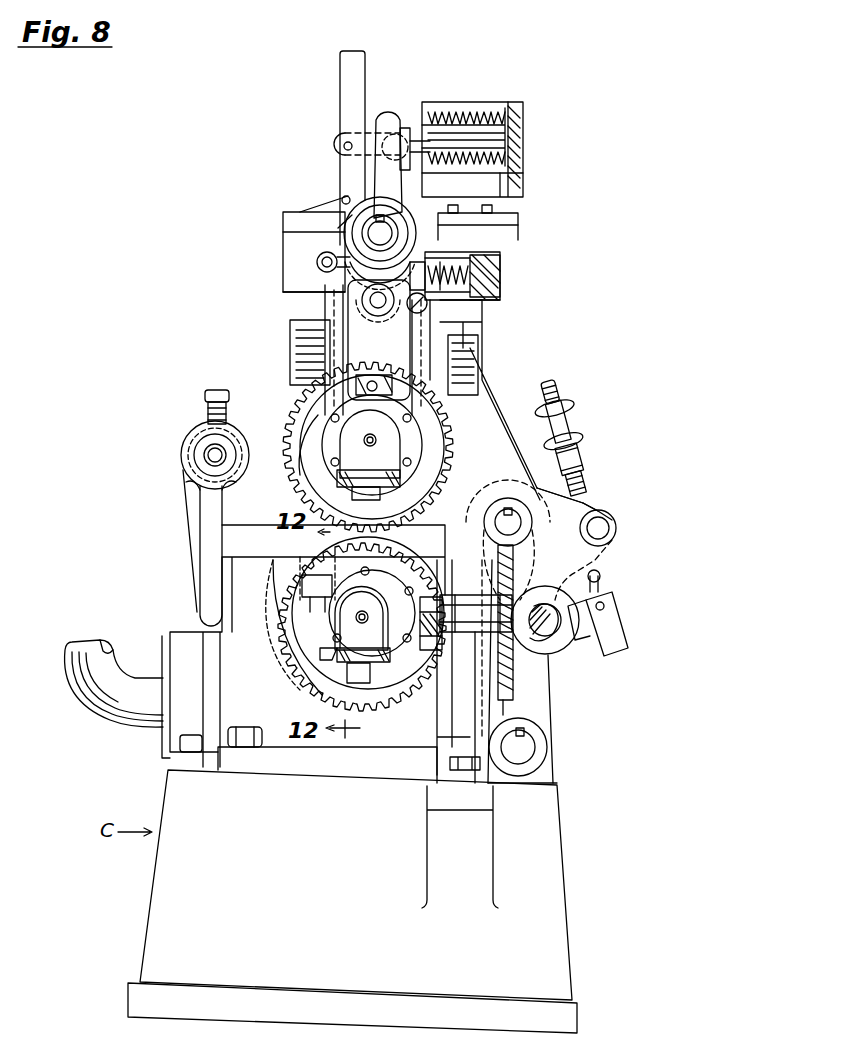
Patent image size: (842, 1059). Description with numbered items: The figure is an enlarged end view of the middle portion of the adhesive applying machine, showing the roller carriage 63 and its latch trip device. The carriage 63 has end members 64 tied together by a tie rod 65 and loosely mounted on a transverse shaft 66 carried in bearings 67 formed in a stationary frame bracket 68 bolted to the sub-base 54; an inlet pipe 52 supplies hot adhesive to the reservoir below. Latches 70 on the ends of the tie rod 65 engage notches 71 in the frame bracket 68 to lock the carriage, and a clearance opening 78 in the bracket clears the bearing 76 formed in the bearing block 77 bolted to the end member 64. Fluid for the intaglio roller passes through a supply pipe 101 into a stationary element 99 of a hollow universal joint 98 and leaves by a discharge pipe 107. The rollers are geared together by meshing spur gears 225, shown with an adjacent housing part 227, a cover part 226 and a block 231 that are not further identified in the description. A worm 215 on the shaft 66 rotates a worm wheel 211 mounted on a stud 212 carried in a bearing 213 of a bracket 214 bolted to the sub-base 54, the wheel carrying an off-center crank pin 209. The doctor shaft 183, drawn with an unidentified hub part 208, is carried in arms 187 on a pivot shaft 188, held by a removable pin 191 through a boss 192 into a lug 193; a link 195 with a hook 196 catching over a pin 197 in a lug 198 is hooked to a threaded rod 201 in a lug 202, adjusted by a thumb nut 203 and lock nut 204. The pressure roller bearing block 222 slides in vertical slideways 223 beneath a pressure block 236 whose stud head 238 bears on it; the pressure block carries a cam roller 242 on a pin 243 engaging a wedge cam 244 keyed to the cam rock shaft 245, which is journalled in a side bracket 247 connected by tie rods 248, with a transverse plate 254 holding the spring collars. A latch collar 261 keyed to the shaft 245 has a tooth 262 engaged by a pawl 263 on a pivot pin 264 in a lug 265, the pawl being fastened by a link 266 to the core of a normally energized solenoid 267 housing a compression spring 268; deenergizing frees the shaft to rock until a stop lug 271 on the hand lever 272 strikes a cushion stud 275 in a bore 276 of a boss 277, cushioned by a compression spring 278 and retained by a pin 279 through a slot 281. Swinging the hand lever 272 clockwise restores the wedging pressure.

The pawl 263 is at (345, 78).
The link 266 is at (372, 135).
The hand lever 272 is at (392, 118).
The solenoid 267 is at (498, 108).
The compression spring 268 is at (447, 120).
The transverse plate 254 is at (452, 192).
The projecting tooth 262 is at (345, 230).
The lug 265 is at (345, 215).
The pivot pin 264 is at (344, 197).
The latch collar 261 is at (345, 232).
The side bracket 247 is at (290, 247).
The stop lug 271 is at (317, 262).
The tie rod 248 is at (355, 268).
The cushion stud 275 is at (502, 276).
The bore 276 is at (460, 254).
The pin 279 is at (470, 258).
The slot 281 is at (472, 266).
The compression spring 278 is at (490, 292).
The boss 277 is at (480, 300).
The cam rock shaft 245 is at (470, 240).
The cam roller 242 is at (370, 300).
The wedge cam 244 is at (345, 288).
The pressure block 236 is at (358, 335).
The pin 243 is at (290, 340).
The vertical slideway 223 is at (340, 390).
The enlarged head 238 is at (374, 385).
The carriage 63 is at (495, 374).
The spur gear 225 is at (452, 430).
The housing 227 is at (318, 464).
The bearing block 222 is at (340, 409).
The cover 226 is at (380, 434).
The block 231 is at (372, 480).
The tie rod 65 is at (205, 459).
The end member 64 is at (232, 385).
The latch 70 is at (205, 542).
The notch 71 is at (245, 592).
The clearance opening 78 is at (270, 584).
The bearing block 77 is at (308, 599).
The bearing 76 is at (300, 618).
The inlet pipe 52 is at (95, 692).
The fluid supply pipe 101 is at (366, 609).
The universal joint 98 is at (342, 656).
The stationary element 99 is at (338, 664).
The discharge pipe 107 is at (364, 674).
The stud 212 is at (424, 652).
The bearing 213 is at (476, 613).
The bracket 214 is at (461, 671).
The bearing 67 is at (500, 500).
The worm 215 is at (508, 522).
The transverse shaft 66 is at (560, 509).
The lug 202 is at (578, 455).
The threaded rod 201 is at (572, 390).
The lock nut 204 is at (584, 408).
The thumb nut 203 is at (584, 440).
The removable pin 191 is at (612, 528).
The boss 192 is at (616, 535).
The lug 193 is at (608, 517).
The doctor shaft 183 is at (552, 639).
The hub 208 is at (540, 610).
The link 195 is at (602, 579).
The hook 196 is at (614, 632).
The pin 197 is at (606, 608).
The lug 198 is at (584, 642).
The crank pin 209 is at (516, 667).
The worm wheel 211 is at (505, 702).
The arm 187 is at (540, 692).
The pivot shaft 188 is at (535, 752).
The frame bracket 68 is at (385, 754).
The sub-base 54 is at (352, 901).